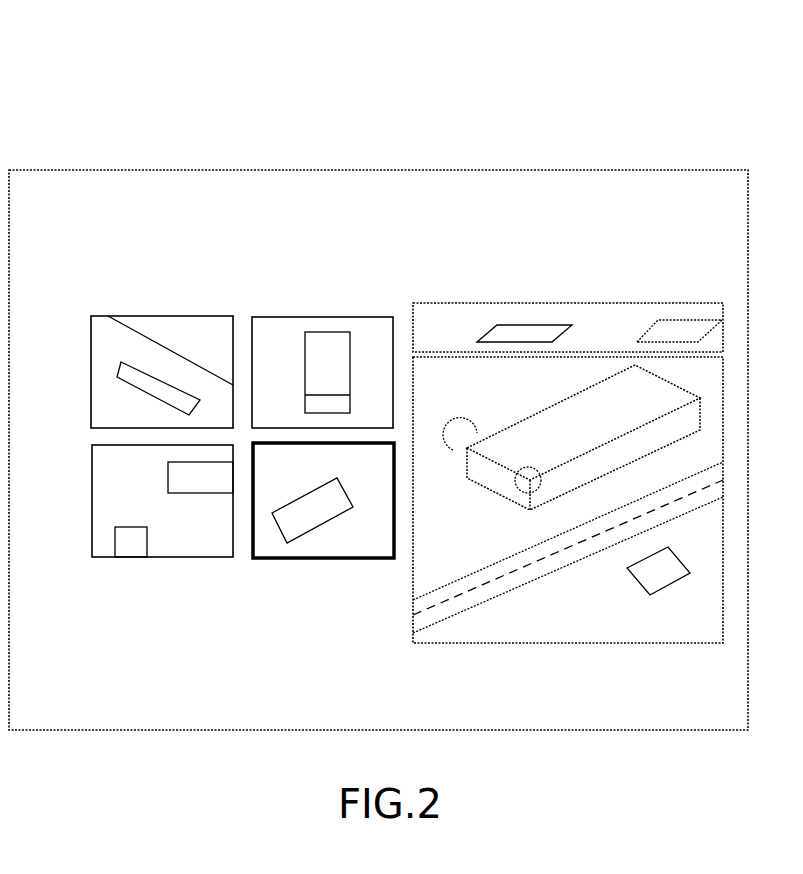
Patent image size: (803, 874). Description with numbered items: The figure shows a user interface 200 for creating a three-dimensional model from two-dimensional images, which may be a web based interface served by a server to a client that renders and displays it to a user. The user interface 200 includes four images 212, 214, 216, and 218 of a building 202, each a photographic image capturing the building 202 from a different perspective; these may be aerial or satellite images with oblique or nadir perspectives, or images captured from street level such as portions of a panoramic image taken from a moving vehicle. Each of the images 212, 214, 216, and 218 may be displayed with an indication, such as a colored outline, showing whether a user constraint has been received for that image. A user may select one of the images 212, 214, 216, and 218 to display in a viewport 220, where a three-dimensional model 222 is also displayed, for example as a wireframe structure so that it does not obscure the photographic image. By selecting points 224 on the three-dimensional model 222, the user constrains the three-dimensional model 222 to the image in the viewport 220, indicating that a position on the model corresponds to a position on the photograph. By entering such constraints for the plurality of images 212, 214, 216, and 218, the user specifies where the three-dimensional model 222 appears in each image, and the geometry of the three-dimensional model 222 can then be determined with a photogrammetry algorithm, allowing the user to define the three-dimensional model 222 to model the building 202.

The user interface 200 is at (152, 116).
The building 202 is at (127, 372).
The image 212 is at (140, 418).
The image 214 is at (140, 482).
The image 216 is at (297, 422).
The image 218 is at (303, 481).
The viewport 220 is at (462, 339).
The three-dimensional model 222 is at (615, 380).
The points 224 is at (520, 484).